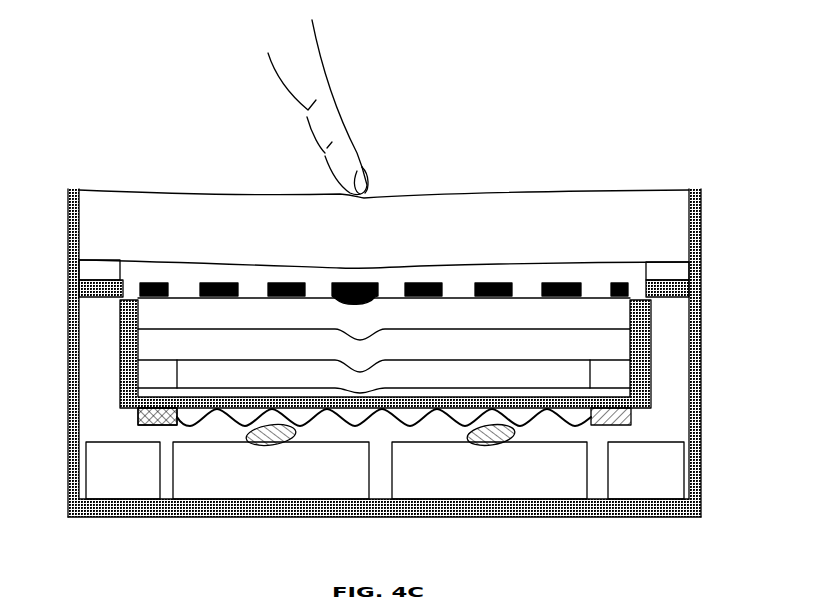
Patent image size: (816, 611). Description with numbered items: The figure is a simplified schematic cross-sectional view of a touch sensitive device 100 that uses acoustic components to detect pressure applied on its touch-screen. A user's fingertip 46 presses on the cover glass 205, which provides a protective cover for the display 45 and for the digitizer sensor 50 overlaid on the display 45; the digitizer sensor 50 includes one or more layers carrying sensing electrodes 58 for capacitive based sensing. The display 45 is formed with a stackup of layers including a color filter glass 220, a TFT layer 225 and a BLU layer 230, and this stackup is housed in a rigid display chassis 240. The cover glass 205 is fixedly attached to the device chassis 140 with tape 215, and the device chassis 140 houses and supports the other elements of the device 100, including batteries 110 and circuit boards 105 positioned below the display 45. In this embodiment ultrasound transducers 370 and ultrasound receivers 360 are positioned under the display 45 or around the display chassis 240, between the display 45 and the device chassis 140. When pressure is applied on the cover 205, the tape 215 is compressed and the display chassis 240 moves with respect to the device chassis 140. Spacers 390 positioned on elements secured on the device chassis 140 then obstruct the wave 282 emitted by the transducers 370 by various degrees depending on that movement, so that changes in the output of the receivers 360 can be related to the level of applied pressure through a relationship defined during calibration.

The touch sensitive device 100 is at (384, 326).
The fingertip 46 is at (356, 148).
The digitizer sensor 50 is at (223, 275).
The sensing electrodes 58 is at (147, 281).
The cover glass 205 is at (633, 189).
The tape or glue 215 is at (657, 265).
The display 45 is at (397, 334).
The display chassis 240 is at (644, 332).
The color filter glass 220 is at (168, 317).
The TFT layer 225 is at (168, 355).
The BLU layer 230 is at (158, 375).
The ultrasound transducers 370 is at (132, 417).
The ultrasound receivers 360 is at (631, 418).
The wave 282 is at (207, 415).
The spacers 390 is at (272, 445).
The circuit boards 105 is at (110, 460).
The batteries 110 is at (257, 480).
The device chassis 140 is at (152, 508).